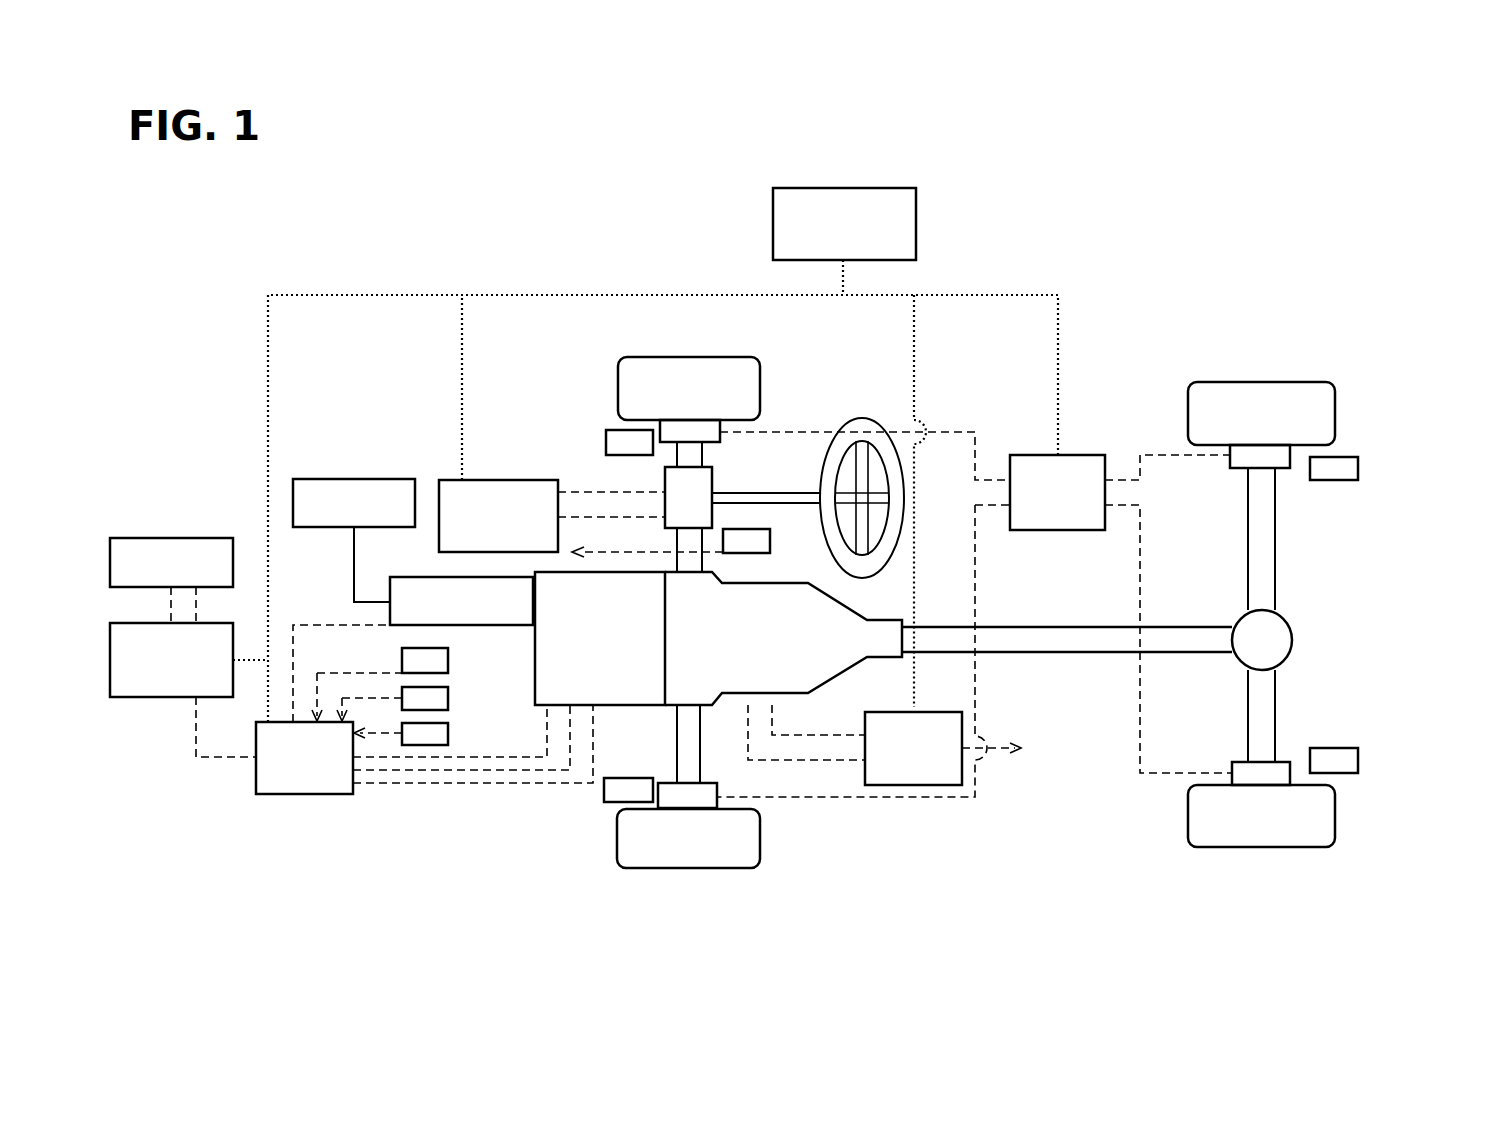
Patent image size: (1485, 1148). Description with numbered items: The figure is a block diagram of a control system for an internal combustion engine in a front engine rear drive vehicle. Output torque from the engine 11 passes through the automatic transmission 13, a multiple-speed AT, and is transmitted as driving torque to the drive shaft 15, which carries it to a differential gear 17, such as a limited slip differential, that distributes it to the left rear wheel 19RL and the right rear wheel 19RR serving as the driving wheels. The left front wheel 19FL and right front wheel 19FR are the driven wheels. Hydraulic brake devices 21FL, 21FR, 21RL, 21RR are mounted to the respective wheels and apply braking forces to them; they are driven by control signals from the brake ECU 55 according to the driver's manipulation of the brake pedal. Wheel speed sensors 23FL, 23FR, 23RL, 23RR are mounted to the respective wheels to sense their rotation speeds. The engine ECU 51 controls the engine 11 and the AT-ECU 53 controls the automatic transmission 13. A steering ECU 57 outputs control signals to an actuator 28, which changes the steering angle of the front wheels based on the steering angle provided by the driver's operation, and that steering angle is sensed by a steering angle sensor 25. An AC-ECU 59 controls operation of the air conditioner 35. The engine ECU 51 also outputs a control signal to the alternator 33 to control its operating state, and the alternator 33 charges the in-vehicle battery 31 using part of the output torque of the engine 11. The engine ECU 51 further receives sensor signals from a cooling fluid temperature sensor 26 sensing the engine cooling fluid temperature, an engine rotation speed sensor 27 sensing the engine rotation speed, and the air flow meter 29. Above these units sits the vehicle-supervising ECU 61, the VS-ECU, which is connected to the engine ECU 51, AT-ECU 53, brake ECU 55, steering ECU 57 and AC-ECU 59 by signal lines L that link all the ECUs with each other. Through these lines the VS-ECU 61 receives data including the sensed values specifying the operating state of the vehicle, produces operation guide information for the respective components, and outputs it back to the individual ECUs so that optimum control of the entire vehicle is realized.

The engine 11 is at (605, 705).
The automatic transmission 13 is at (758, 583).
The drive shaft 15 is at (1008, 652).
The differential gear 17 is at (1288, 618).
The right front wheel 19FR is at (672, 357).
The left front wheel 19FL is at (675, 868).
The right rear wheel 19RR is at (1250, 382).
The left rear wheel 19RL is at (1250, 847).
The hydraulic brake device 21FR is at (712, 442).
The hydraulic brake device 21FL is at (710, 792).
The hydraulic brake device 21RR is at (1238, 468).
The hydraulic brake device 21RL is at (1238, 762).
The wheel speed sensor 23FR is at (612, 430).
The wheel speed sensor 23FL is at (615, 802).
The wheel speed sensor 23RR is at (1335, 480).
The wheel speed sensor 23RL is at (1338, 748).
The steering angle sensor 25 is at (748, 529).
The cooling fluid temperature sensor 26 is at (448, 660).
The engine rotation speed sensor 27 is at (448, 698).
The actuator 28 is at (665, 480).
The air flow meter 29 is at (448, 735).
The in-vehicle battery 31 is at (340, 479).
The alternator 33 is at (440, 577).
The air conditioner 35 is at (148, 538).
The engine ECU 51 is at (280, 794).
The AT-ECU 53 is at (900, 712).
The brake ECU 55 is at (1070, 455).
The steering ECU 57 is at (510, 480).
The AC-ECU 59 is at (125, 697).
The vehicle-supervising ECU 61 is at (916, 222).
The signal lines L is at (355, 293).